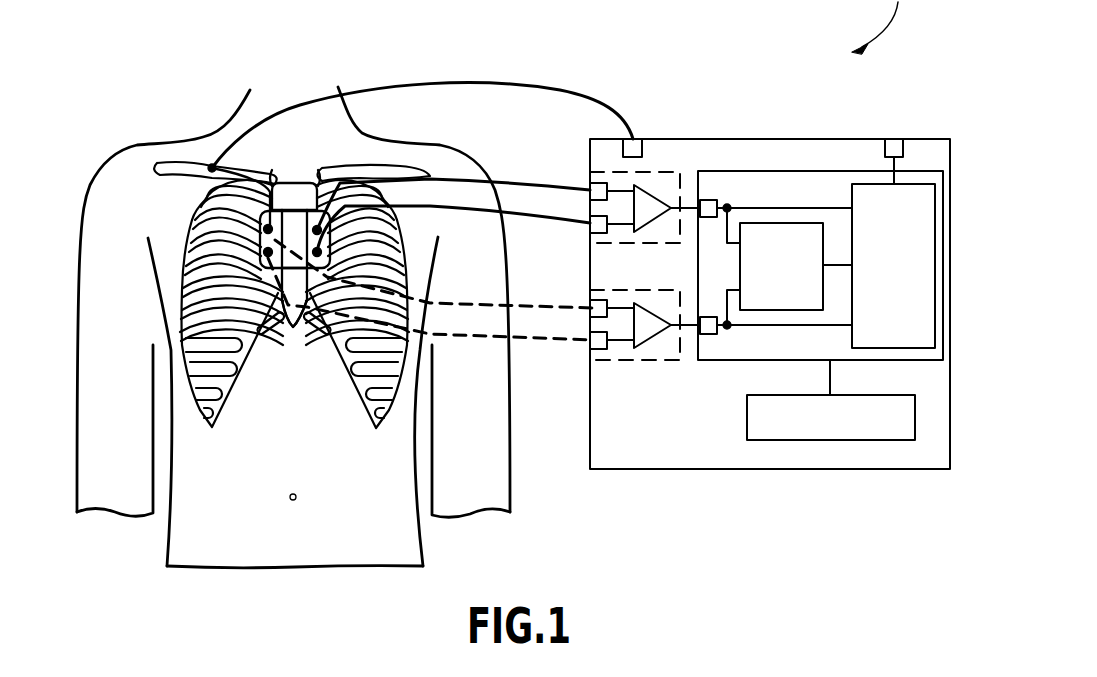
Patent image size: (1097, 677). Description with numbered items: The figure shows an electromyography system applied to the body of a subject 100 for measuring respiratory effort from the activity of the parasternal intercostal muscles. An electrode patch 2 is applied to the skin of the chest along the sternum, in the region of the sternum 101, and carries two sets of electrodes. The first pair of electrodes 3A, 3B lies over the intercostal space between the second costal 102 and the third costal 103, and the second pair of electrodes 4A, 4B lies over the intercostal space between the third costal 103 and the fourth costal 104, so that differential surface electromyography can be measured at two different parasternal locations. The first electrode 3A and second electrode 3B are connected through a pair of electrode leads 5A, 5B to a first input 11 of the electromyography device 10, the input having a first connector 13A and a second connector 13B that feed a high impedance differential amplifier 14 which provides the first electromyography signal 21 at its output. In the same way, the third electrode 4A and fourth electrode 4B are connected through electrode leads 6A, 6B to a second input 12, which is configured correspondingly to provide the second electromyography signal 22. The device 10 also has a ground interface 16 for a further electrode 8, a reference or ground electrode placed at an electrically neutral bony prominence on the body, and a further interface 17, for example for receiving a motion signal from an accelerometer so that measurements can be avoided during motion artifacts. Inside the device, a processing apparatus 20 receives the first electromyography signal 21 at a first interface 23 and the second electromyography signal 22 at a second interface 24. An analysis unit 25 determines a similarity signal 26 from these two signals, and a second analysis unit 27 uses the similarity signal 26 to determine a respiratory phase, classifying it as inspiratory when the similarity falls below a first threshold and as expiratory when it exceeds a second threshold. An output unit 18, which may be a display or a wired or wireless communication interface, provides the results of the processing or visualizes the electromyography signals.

The electrode patch 2 is at (298, 210).
The further electrode 8 is at (212, 168).
The electromyography device 10 is at (740, 138).
The first input 11 is at (605, 170).
The second input 12 is at (624, 362).
The first connector 13A is at (593, 225).
The second connector 13B is at (593, 190).
The differential amplifier 14 is at (645, 190).
The ground interface 16 is at (637, 138).
The further interface 17 is at (892, 139).
The output unit 18 is at (831, 400).
The processing apparatus 20 is at (805, 171).
The first electromyography signal 21 is at (683, 202).
The second electromyography signal 22 is at (690, 327).
The first interface 23 is at (710, 198).
The second interface 24 is at (707, 335).
The analysis unit 25 is at (781, 266).
The similarity signal 26 is at (840, 262).
The second analysis unit 27 is at (893, 266).
The first electrode 3A is at (268, 229).
The second electrode 3B is at (317, 230).
The third electrode 4A is at (268, 252).
The fourth electrode 4B is at (317, 252).
The electrode lead 5A is at (447, 207).
The electrode lead 5B is at (469, 175).
The electrode lead 6A is at (532, 340).
The electrode lead 6B is at (565, 310).
The subject 100 is at (255, 556).
The xiphoid process 101 is at (293, 330).
The second costal 102 is at (208, 192).
The third costal 103 is at (192, 225).
The fourth costal 104 is at (200, 250).